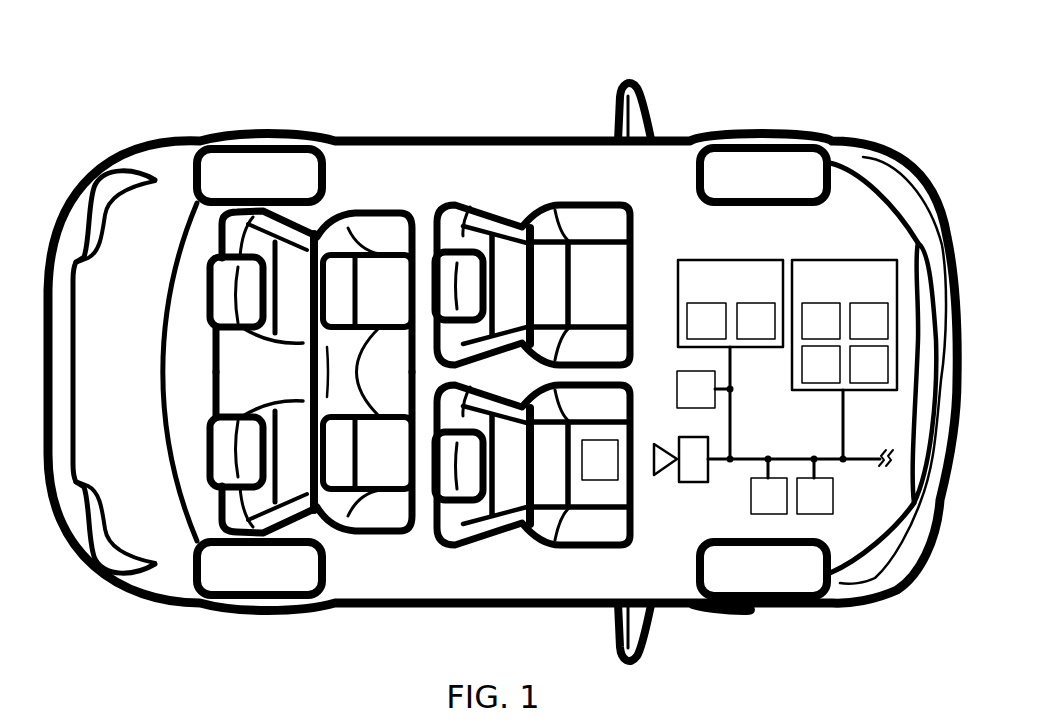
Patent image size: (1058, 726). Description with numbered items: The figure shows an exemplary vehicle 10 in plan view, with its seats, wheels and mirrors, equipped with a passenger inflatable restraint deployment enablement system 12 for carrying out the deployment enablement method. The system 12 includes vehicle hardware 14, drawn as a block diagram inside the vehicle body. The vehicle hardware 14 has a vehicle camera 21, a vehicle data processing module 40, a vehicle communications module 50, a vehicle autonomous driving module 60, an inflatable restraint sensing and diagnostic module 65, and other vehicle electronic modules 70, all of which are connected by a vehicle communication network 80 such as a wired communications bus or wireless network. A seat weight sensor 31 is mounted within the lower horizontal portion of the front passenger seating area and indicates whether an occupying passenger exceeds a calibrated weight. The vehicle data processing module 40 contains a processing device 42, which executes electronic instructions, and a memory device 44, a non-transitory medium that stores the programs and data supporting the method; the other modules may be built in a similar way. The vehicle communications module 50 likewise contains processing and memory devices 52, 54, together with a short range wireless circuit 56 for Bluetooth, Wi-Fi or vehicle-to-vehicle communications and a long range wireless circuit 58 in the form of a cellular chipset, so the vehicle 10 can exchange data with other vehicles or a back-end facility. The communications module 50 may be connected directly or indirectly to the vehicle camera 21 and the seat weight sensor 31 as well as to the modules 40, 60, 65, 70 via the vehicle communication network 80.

The vehicle 10 is at (370, 66).
The passenger inflatable restraint deployment enablement system 12 is at (663, 92).
The vehicle hardware 14 is at (775, 370).
The vehicle camera 21 is at (698, 485).
The seat weight sensor 31 is at (587, 472).
The vehicle data processing module 40 is at (716, 291).
The processing device 42 is at (693, 334).
The memory device 44 is at (742, 334).
The vehicle communications module 50 is at (831, 291).
The processing device 52 is at (807, 334).
The memory device 54 is at (855, 334).
The short range wireless circuit 56 is at (807, 377).
The long range wireless circuit 58 is at (855, 377).
The vehicle autonomous driving module 60 is at (755, 509).
The inflatable restraint sensing and diagnostic module 65 is at (682, 402).
The other vehicle electronic modules 70 is at (801, 509).
The vehicle communication network 80 is at (745, 457).